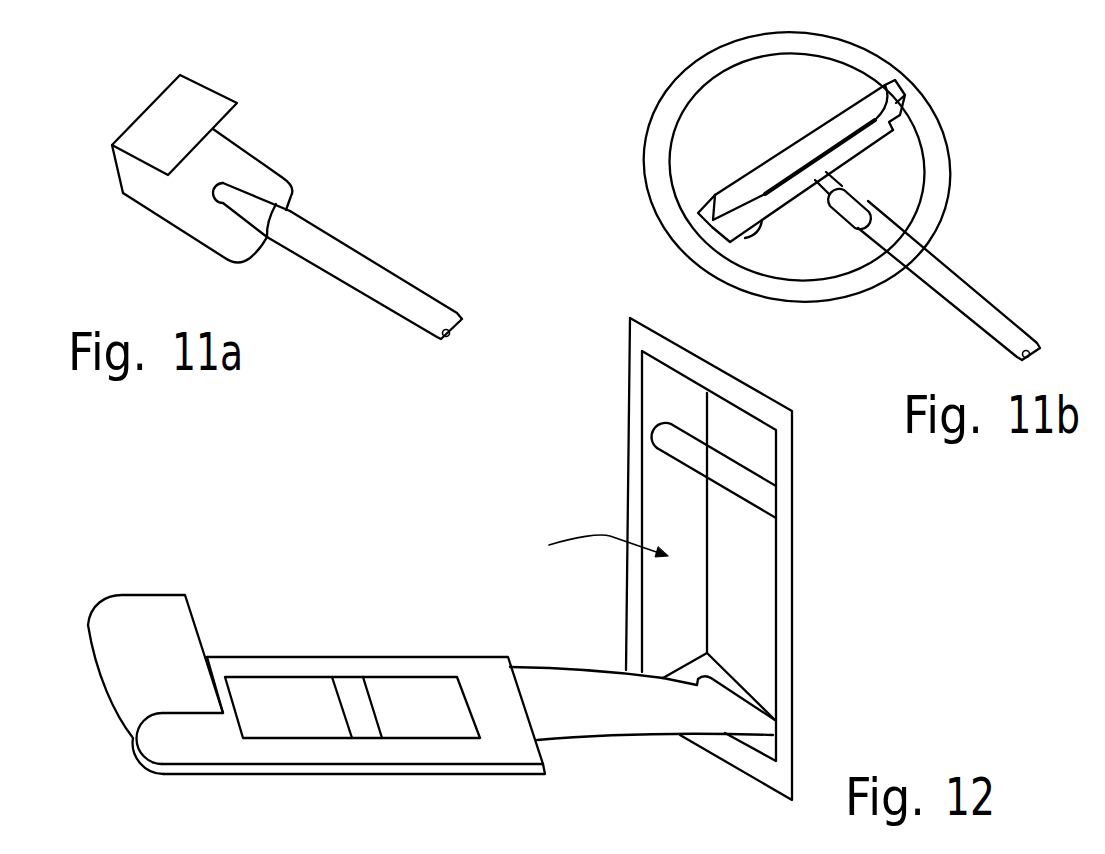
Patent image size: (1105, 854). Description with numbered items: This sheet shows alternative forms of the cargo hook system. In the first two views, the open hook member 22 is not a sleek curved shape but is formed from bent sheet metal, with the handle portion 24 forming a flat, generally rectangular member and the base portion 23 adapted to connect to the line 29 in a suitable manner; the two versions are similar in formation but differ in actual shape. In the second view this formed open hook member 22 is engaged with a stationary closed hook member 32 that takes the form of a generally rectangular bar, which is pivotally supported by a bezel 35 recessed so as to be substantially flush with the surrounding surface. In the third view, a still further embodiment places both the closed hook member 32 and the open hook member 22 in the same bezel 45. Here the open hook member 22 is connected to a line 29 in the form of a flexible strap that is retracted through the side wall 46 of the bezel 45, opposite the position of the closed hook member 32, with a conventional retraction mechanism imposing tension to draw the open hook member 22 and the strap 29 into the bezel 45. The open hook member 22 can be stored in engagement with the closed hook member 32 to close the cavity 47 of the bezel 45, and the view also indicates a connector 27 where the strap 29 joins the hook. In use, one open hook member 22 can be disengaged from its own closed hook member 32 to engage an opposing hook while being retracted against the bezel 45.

In FIG. 11a, the open hook member 22 is at (241, 146).
In FIG. 11b, the open hook member 22 is at (740, 237).
In FIG. 12, the open hook member 22 is at (302, 657).
In FIG. 11a, the base portion 23 is at (280, 177).
In FIG. 11b, the base portion 23 is at (865, 205).
In FIG. 12, the base portion 23 is at (477, 690).
In FIG. 11a, the handle portion 24 is at (107, 175).
In FIG. 11b, the handle portion 24 is at (727, 183).
In FIG. 12, the handle portion 24 is at (117, 708).
In FIG. 12, the tube connector 27 is at (743, 699).
In FIG. 11a, the line 29 is at (380, 263).
In FIG. 11b, the line 29 is at (930, 270).
In FIG. 12, the line 29 is at (582, 730).
In FIG. 11b, the closed hook member 32 is at (893, 93).
In FIG. 12, the closed hook member 32 is at (681, 456).
In FIG. 11b, the bezel 35 is at (678, 77).
In FIG. 12, the bezel 45 is at (792, 609).
In FIG. 12, the side wall 46 is at (687, 672).
In FIG. 12, the cavity 47 is at (591, 549).